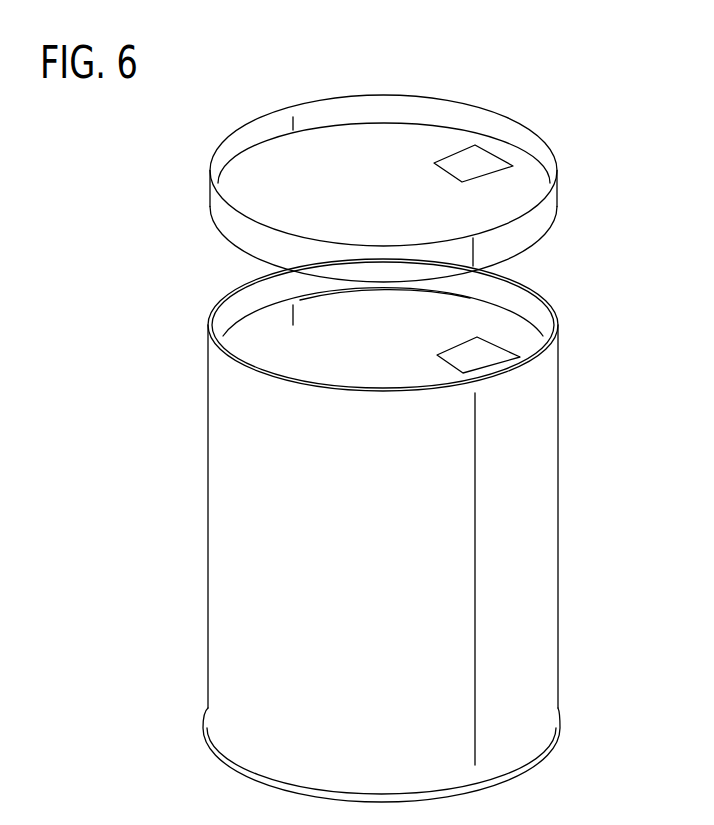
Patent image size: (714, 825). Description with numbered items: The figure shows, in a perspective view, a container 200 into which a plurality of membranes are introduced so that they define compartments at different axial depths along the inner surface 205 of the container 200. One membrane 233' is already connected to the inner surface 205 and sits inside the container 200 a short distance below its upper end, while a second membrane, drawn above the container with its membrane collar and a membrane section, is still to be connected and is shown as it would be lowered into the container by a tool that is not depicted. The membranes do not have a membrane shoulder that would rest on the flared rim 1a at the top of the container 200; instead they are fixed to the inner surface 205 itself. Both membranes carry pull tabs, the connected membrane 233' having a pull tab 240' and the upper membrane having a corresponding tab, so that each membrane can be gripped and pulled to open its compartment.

The container 200 is at (530, 647).
The flared rim 1a is at (211, 303).
The inner surface 205 is at (222, 310).
The membrane 233' is at (346, 362).
The pull tab 240' is at (441, 345).